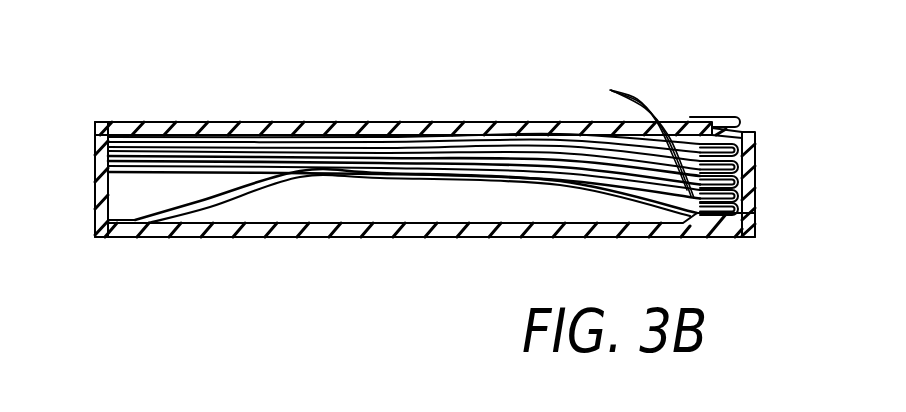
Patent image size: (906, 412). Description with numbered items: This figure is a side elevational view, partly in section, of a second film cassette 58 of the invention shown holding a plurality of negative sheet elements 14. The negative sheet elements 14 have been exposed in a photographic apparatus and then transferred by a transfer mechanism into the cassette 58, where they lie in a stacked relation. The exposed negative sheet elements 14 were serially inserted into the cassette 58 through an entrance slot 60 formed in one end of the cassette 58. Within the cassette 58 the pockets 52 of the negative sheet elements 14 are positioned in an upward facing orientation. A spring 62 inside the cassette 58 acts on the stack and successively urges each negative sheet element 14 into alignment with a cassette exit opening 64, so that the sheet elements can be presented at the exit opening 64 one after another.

The negative sheet elements 14 is at (211, 175).
The pockets 52 is at (638, 138).
The cassette 58 is at (438, 122).
The entrance slot 60 is at (95, 140).
The spring 62 is at (408, 178).
The cassette exit opening 64 is at (775, 112).